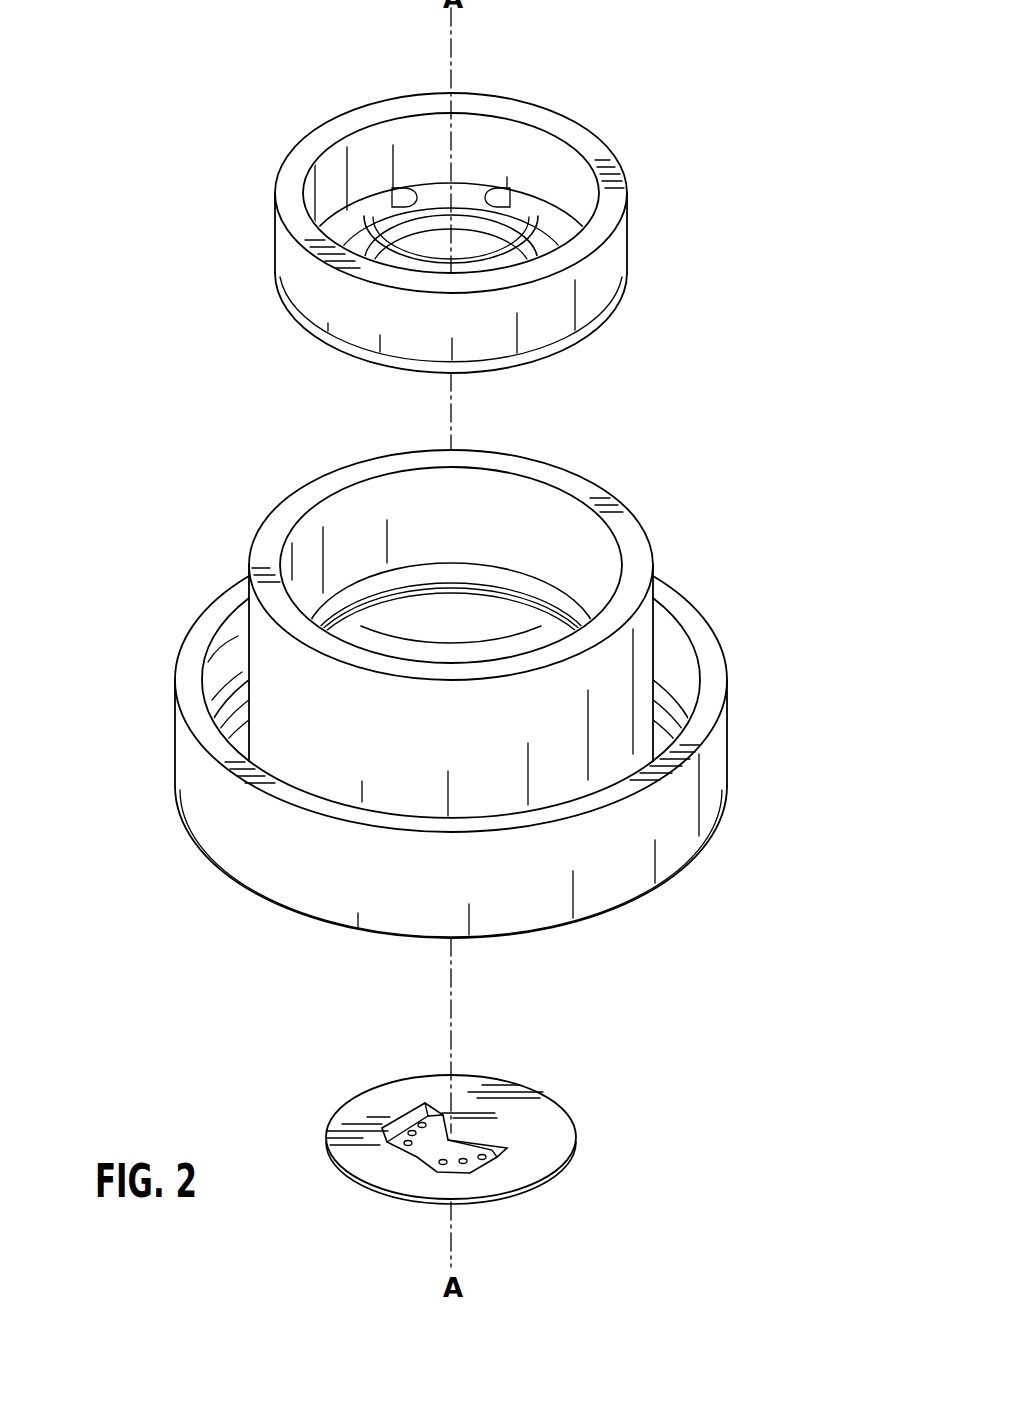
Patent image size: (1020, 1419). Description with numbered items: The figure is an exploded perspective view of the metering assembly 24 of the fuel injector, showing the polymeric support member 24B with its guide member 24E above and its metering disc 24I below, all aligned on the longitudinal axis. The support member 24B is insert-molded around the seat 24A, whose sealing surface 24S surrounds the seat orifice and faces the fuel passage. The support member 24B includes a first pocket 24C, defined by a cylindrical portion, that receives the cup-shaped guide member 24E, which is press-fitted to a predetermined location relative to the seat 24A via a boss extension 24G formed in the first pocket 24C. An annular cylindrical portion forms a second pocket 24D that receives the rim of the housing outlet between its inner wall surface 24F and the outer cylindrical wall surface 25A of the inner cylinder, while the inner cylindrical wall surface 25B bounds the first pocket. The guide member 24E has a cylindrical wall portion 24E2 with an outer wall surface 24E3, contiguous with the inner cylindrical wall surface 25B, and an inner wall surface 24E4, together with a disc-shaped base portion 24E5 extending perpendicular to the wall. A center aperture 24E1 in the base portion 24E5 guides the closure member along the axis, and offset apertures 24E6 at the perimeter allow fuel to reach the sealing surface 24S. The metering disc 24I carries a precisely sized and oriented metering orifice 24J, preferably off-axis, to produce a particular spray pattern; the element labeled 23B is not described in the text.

The metering assembly 24 is at (85, 836).
The seat 24A is at (451, 673).
The polymeric support member 24B is at (670, 882).
The first pocket 24C is at (441, 604).
The second pocket 24D is at (672, 682).
The guide member 24E is at (459, 186).
The center aperture 24E1 is at (487, 247).
The cylindrical wall portion 24E2 is at (293, 208).
The outer wall surface 24E3 is at (600, 297).
The inner wall surface 24E4 is at (470, 135).
The base portion 24E5 is at (467, 192).
The offset aperture 24E6 is at (350, 230).
The inner wall surface 24F is at (225, 672).
The boss extension 24G is at (451, 647).
The metering disc 24I is at (538, 1121).
The metering orifice 24J is at (492, 1152).
The sealing surface 24S is at (451, 634).
The outer cylindrical wall surface 25A is at (232, 660).
The inner cylindrical wall surface 25B is at (303, 545).
The rim 23B is at (185, 678).